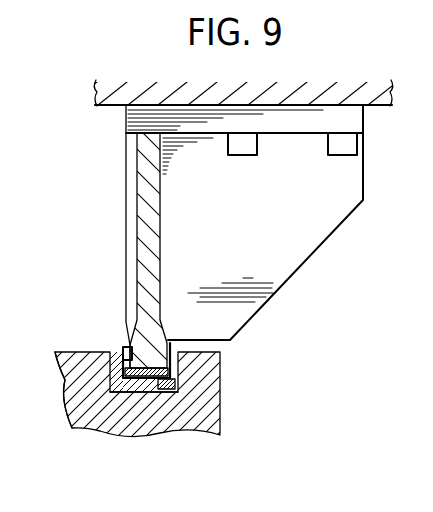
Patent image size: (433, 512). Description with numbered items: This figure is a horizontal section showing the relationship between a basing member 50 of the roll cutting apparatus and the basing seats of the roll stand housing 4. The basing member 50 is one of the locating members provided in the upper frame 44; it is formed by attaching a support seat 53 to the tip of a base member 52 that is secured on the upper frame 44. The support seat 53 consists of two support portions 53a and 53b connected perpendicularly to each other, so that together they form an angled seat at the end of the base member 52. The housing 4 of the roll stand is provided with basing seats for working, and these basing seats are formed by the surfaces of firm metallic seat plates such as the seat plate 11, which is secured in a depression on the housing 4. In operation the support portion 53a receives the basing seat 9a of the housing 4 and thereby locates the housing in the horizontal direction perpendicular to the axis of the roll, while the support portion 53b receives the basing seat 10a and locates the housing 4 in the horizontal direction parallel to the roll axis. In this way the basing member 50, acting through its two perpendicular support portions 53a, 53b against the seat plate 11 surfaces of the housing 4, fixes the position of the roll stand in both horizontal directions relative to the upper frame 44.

The upper frame 44 is at (100, 104).
The basing member 50 is at (194, 261).
The base member 52 is at (137, 230).
The support seat 53 is at (181, 343).
The support portion 53a is at (145, 372).
The support portion 53b is at (123, 347).
The housing 4 is at (156, 403).
The basing seat 10a is at (77, 409).
The basing seat 9a is at (142, 394).
The seat plate 11 is at (127, 395).